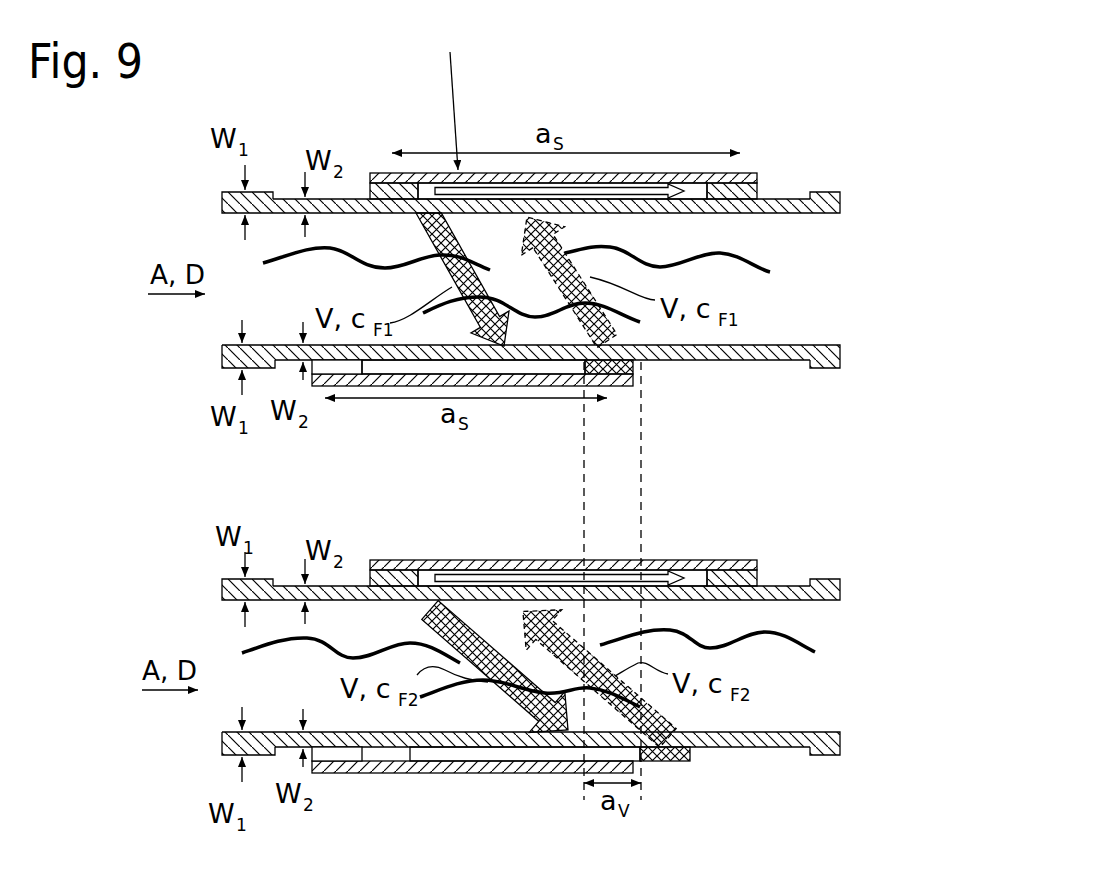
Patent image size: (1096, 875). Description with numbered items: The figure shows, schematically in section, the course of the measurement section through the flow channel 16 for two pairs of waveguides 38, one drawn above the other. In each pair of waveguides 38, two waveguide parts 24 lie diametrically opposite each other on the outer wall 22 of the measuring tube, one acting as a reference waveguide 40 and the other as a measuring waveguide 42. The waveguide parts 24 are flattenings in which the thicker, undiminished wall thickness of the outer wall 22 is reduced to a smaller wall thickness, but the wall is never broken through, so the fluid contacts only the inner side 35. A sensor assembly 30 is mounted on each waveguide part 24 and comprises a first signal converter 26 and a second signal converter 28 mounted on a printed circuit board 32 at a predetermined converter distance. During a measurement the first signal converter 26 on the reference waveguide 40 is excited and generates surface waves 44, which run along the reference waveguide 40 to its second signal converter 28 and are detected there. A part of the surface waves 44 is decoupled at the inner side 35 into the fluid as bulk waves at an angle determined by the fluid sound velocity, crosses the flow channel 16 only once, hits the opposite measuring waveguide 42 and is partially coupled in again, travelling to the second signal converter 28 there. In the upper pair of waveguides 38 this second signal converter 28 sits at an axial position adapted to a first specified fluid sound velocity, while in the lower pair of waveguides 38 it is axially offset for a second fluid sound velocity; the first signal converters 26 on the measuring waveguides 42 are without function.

The flow channel 16 is at (787, 322).
The outer wall 22 is at (262, 190).
The waveguide part 24 is at (531, 421).
The first signal converter 26 is at (378, 180).
The second signal converter 28 is at (740, 185).
The sensor assembly 30 is at (451, 96).
The printed circuit board 32 is at (500, 178).
The inner side 35 is at (588, 212).
The pair of waveguides 38 is at (832, 237).
The reference waveguide 40 is at (345, 190).
The measuring waveguide 42 is at (727, 352).
The surface waves 44 is at (641, 185).